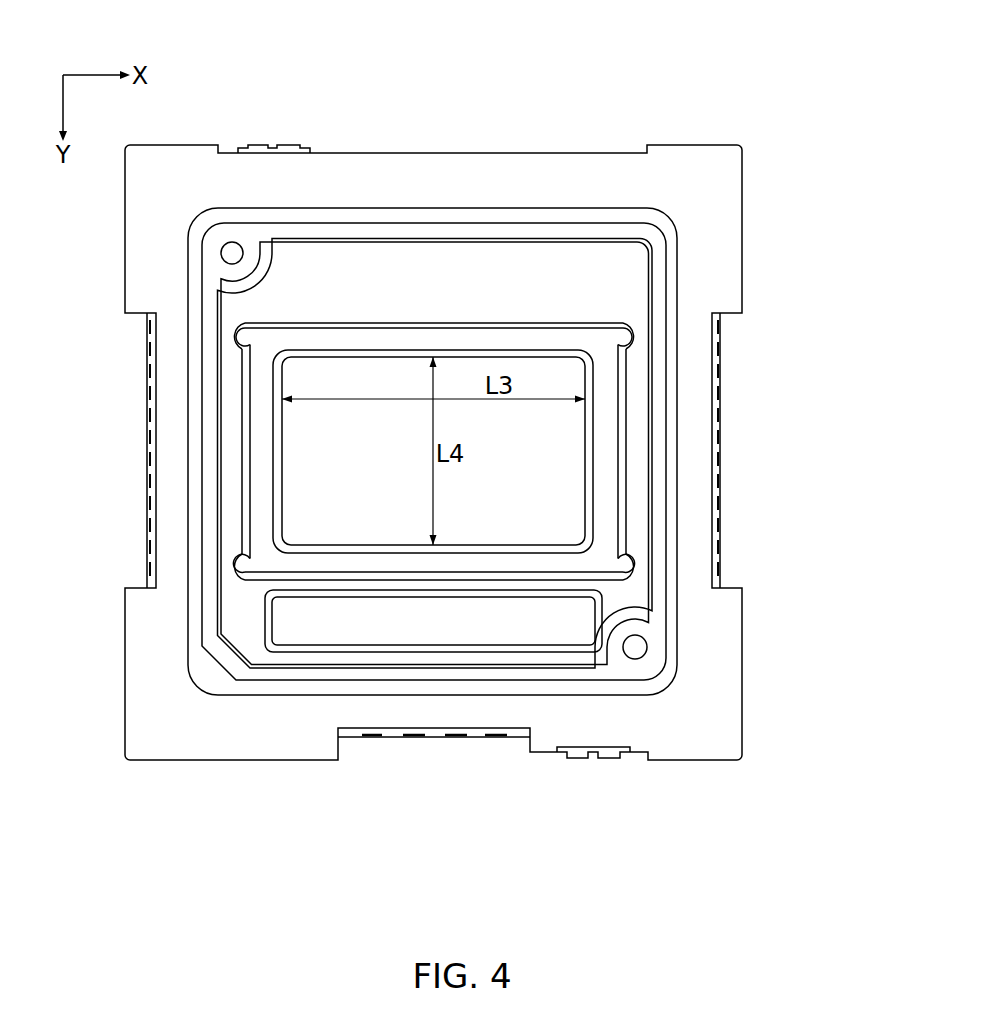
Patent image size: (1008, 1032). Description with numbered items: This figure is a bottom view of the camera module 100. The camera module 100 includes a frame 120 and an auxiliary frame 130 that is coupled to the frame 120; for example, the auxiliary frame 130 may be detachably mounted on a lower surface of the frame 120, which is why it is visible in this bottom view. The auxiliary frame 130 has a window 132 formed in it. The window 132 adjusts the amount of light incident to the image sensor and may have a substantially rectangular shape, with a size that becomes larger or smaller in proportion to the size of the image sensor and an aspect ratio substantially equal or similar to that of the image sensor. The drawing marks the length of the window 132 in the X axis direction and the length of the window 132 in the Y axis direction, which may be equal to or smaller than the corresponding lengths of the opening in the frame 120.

The camera module 100 is at (718, 98).
The frame 120 is at (727, 234).
The auxiliary frame 130 is at (660, 452).
The window 132 is at (482, 522).